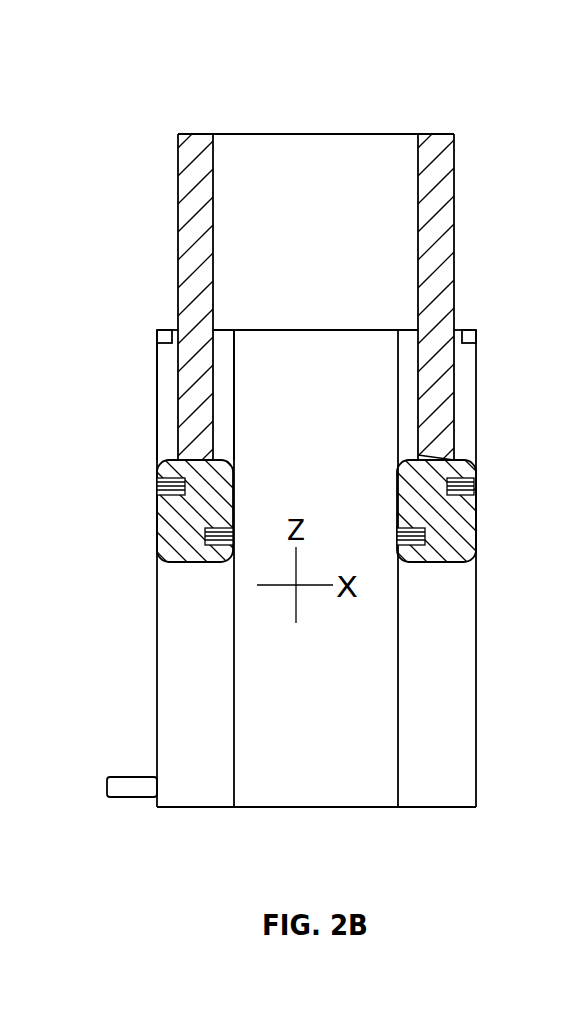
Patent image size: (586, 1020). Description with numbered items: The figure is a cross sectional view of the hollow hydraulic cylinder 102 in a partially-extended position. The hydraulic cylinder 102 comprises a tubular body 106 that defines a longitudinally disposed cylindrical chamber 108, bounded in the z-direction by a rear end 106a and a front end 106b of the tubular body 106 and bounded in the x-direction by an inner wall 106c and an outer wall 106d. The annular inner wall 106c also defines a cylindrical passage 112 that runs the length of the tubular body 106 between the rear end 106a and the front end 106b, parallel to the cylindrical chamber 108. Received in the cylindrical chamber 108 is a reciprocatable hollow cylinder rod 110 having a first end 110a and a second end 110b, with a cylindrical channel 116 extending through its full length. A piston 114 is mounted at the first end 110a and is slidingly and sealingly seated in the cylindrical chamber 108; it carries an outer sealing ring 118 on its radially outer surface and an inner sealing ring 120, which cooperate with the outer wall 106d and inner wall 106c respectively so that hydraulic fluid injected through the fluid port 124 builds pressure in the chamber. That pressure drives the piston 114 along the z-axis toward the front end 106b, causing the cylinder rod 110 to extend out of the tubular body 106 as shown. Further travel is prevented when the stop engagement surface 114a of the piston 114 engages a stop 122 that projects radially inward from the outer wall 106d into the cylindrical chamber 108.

The hydraulic cylinder 102 is at (144, 54).
The tubular body 106 is at (477, 626).
The rear end 106a is at (432, 808).
The front end 106b is at (222, 328).
The inner wall 106c is at (236, 376).
The outer wall 106d is at (156, 380).
The cylindrical chamber 108 is at (197, 792).
The hollow cylinder rod 110 is at (456, 226).
The first end 110a is at (398, 456).
The second end 110b is at (193, 131).
The cylindrical passage 112 is at (308, 792).
The piston 114 is at (462, 536).
The stop engagement surface 114a is at (476, 452).
The cylindrical channel 116 is at (319, 149).
The outer sealing ring 118 is at (157, 486).
The inner sealing ring 120 is at (234, 537).
The stop 122 is at (478, 338).
The fluid port 124 is at (122, 799).